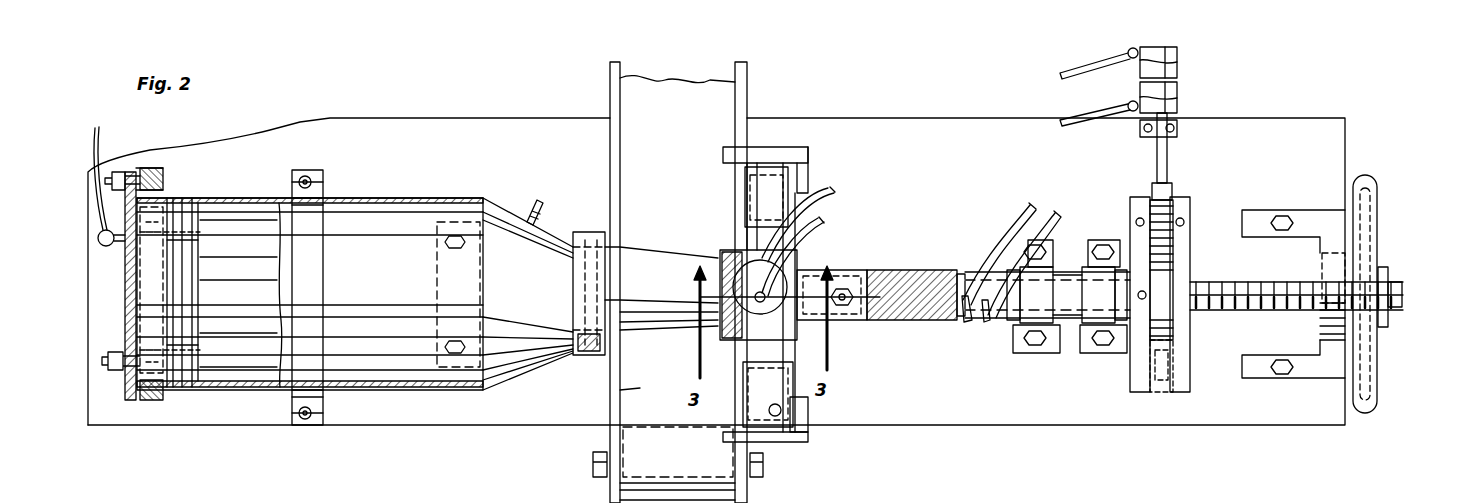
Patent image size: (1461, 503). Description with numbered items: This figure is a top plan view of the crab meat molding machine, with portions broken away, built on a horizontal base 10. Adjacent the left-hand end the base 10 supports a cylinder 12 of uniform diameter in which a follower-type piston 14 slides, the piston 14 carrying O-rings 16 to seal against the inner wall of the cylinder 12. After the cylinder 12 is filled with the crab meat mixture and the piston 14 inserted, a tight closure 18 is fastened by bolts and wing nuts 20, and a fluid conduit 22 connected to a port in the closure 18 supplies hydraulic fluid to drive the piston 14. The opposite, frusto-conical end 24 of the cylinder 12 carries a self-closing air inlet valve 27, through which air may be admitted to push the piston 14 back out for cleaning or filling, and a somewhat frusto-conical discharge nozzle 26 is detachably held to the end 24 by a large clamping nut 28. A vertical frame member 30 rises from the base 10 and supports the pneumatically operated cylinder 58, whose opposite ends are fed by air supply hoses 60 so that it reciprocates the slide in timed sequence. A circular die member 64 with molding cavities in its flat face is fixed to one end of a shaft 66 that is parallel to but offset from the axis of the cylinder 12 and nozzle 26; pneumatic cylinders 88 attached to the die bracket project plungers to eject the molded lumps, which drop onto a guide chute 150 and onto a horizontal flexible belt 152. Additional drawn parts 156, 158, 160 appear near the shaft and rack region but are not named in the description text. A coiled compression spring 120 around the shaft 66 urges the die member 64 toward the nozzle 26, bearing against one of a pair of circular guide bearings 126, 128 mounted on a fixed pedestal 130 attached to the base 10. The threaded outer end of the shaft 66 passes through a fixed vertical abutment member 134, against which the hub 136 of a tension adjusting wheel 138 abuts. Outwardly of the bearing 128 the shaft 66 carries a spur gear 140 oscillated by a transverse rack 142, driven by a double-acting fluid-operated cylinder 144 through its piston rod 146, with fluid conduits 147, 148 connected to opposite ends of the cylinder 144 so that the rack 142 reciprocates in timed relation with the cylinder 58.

The base 10 is at (963, 425).
The cylinder 12 is at (395, 200).
The piston 14 is at (198, 236).
The O-rings 16 is at (190, 308).
The closure 18 is at (125, 284).
The bolts and wing nuts 20 is at (115, 372).
The fluid conduit 22 is at (98, 136).
The frusto-conical end 24 is at (500, 390).
The discharge nozzle 26 is at (640, 258).
The air inlet valve 27 is at (540, 200).
The clamping nut 28 is at (596, 232).
The vertical frame member 30 is at (790, 436).
The pneumatically operated cylinder 58 is at (770, 288).
The air supply hoses 60 is at (822, 188).
The die member 64 is at (795, 348).
The shaft 66 is at (998, 322).
The pneumatic cylinders 88 is at (890, 270).
The coiled compression spring 120 is at (965, 322).
The guide bearing 126 is at (1042, 330).
The guide bearing 128 is at (1084, 328).
The pedestal 130 is at (1065, 242).
The vertical abutment member 134 is at (1320, 324).
The hub 136 is at (1383, 268).
The tension adjusting wheel 138 is at (1358, 182).
The spur gear 140 is at (1175, 277).
The rack 142 is at (1155, 197).
The fluid-operated cylinder 144 is at (1178, 100).
The piston rod 146 is at (1172, 163).
The fluid conduit 147 is at (1062, 72).
The fluid conduit 148 is at (1062, 125).
The guide chute 150 is at (695, 258).
The flexible belt 152 is at (640, 388).
The tubes 156 is at (1023, 208).
The lower housing 158 is at (1178, 382).
The housing plate 160 is at (1140, 395).